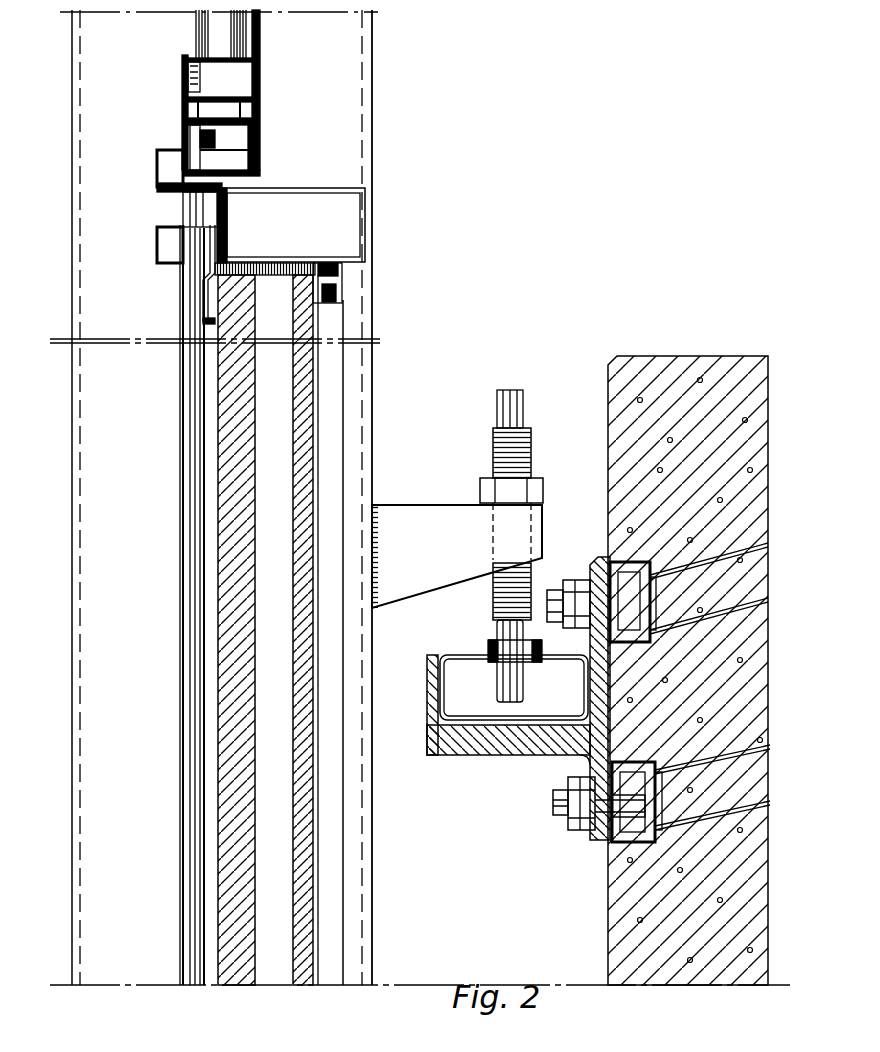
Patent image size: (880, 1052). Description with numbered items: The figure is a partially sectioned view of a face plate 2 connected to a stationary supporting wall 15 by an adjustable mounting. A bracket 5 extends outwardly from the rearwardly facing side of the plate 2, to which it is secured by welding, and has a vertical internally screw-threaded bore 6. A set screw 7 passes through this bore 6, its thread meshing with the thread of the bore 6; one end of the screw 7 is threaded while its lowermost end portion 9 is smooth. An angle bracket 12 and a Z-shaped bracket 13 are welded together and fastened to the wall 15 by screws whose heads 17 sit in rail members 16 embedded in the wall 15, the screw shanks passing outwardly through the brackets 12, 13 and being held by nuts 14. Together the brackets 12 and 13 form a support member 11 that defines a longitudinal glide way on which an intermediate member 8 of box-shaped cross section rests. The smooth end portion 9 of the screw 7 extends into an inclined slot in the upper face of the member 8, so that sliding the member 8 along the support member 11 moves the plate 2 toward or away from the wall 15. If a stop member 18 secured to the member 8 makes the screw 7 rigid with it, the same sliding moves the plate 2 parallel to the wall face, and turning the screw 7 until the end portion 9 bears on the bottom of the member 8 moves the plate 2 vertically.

The face plate 2 is at (322, 409).
The bracket 5 is at (412, 518).
The bore 6 is at (515, 527).
The set screw 7 is at (535, 424).
The intermediate member 8 is at (427, 686).
The lowermost end portion 9 is at (510, 667).
The support member 11 is at (521, 665).
The angle bracket 12 is at (606, 560).
The Z-shaped bracket 13 is at (487, 743).
The nuts 14 is at (570, 583).
The supporting wall 15 is at (672, 368).
The rail members 16 is at (648, 832).
The screw heads 17 is at (636, 796).
The stop member 18 is at (476, 636).